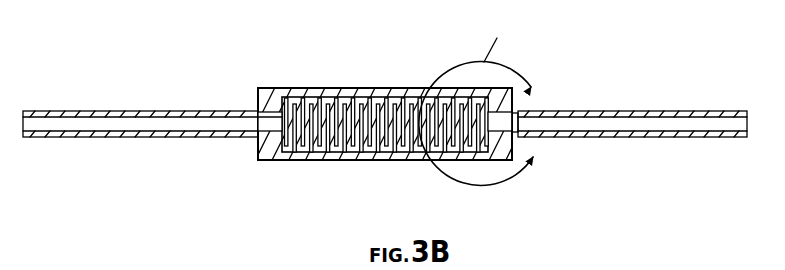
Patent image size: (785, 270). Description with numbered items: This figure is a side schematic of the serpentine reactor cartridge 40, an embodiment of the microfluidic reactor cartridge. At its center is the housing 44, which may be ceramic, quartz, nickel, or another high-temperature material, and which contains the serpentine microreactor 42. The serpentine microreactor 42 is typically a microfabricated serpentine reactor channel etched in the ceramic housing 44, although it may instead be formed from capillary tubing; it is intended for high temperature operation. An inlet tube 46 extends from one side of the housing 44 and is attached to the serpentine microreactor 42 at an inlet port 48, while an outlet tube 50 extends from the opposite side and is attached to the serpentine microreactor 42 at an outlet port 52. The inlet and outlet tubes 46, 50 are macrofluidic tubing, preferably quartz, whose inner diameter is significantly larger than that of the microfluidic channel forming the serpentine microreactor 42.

The serpentine reactor cartridge 40 is at (118, 69).
The serpentine microreactor 42 is at (318, 94).
The housing 44 is at (272, 99).
The inlet tube 46 is at (171, 124).
The inlet port 48 is at (258, 126).
The outlet tube 50 is at (632, 122).
The outlet port 52 is at (520, 111).